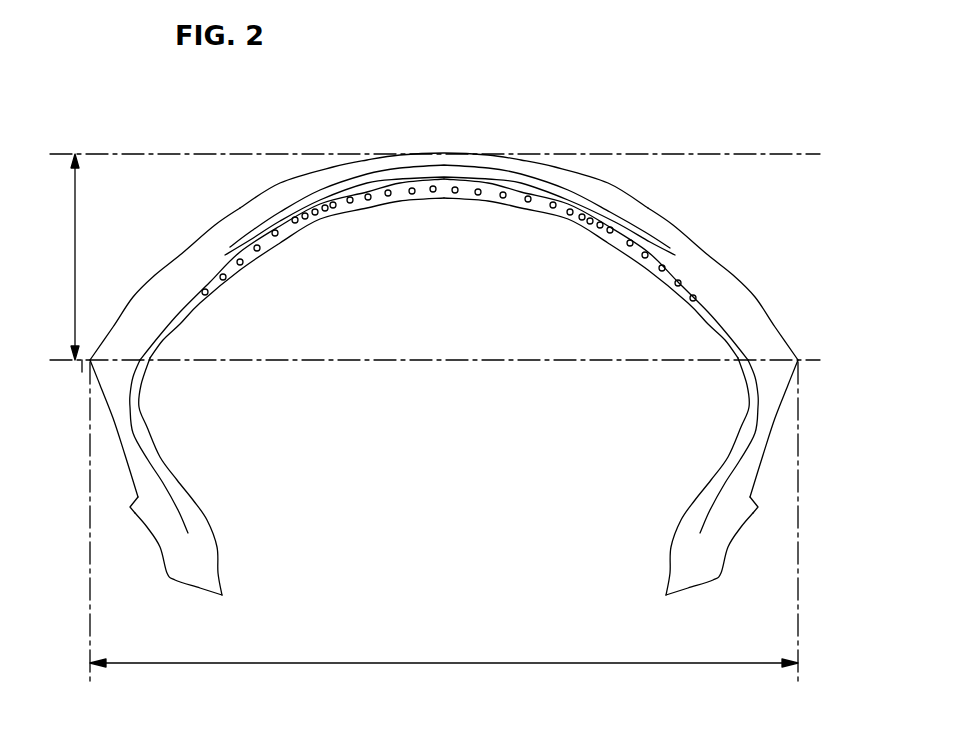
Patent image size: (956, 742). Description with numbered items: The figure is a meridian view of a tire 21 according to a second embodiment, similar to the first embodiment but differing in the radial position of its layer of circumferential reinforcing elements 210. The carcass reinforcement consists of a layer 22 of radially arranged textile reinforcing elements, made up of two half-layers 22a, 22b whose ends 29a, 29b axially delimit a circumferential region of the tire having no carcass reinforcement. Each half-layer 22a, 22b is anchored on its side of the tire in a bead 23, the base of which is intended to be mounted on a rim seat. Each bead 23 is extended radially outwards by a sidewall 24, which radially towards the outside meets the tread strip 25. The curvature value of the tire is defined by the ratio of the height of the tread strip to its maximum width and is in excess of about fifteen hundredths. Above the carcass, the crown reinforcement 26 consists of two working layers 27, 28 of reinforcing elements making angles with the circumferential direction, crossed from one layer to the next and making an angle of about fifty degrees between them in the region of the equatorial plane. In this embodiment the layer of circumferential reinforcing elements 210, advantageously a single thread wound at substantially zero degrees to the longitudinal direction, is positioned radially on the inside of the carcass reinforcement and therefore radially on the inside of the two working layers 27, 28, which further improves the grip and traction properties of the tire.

The tire 21 is at (545, 121).
The carcass reinforcement layer 22 is at (135, 397).
The half-layer 22a is at (170, 484).
The half-layer 22b is at (717, 493).
The bead 23 is at (202, 562).
The sidewall 24 is at (117, 420).
The tread strip 25 is at (298, 176).
The crown reinforcement 26 is at (693, 270).
The working layer 27 is at (234, 242).
The working layer 28 is at (648, 233).
The half-layer end 29a is at (318, 206).
The half-layer end 29b is at (585, 216).
The layer of circumferential reinforcing elements 210 is at (228, 280).